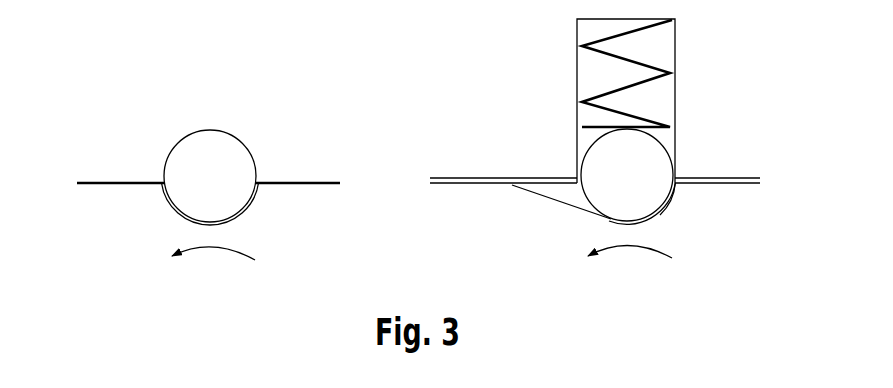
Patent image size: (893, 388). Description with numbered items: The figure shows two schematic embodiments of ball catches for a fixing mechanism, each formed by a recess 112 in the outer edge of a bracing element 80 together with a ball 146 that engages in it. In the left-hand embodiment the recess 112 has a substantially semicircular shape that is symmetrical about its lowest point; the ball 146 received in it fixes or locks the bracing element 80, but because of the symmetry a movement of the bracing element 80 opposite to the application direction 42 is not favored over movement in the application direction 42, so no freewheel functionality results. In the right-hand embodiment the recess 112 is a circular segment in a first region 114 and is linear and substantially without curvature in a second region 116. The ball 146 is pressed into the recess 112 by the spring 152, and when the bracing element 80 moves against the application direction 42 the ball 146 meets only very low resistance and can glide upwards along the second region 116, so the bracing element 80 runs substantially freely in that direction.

The application direction 42 is at (208, 247).
The bracing element 80 is at (337, 222).
The recess 112 is at (166, 205).
The first region 114 is at (686, 214).
The second region 116 is at (510, 205).
The ball 146 is at (190, 158).
The spring 152 is at (643, 65).